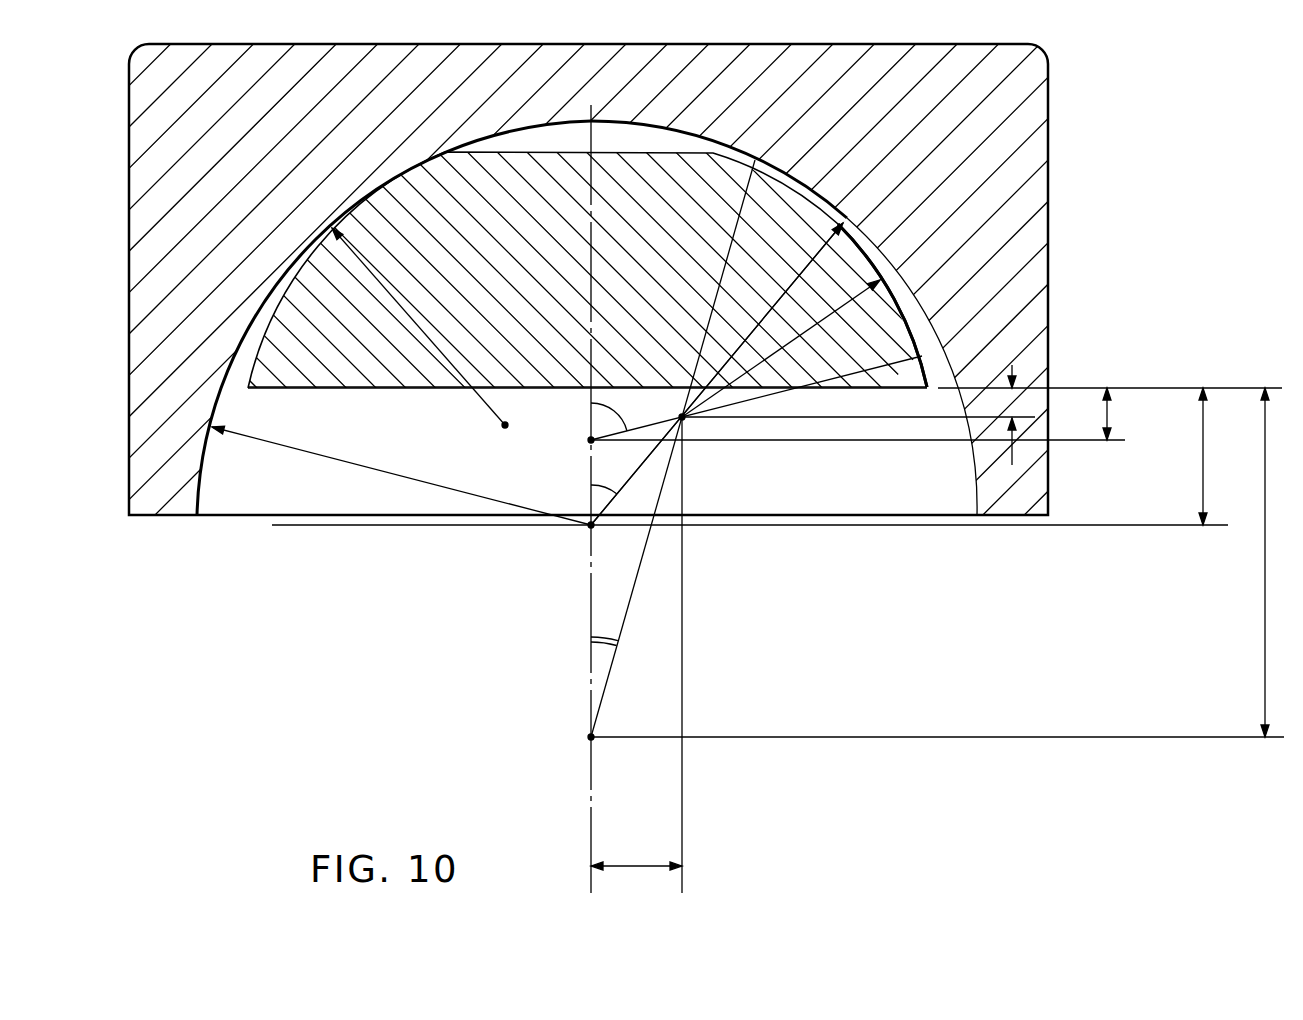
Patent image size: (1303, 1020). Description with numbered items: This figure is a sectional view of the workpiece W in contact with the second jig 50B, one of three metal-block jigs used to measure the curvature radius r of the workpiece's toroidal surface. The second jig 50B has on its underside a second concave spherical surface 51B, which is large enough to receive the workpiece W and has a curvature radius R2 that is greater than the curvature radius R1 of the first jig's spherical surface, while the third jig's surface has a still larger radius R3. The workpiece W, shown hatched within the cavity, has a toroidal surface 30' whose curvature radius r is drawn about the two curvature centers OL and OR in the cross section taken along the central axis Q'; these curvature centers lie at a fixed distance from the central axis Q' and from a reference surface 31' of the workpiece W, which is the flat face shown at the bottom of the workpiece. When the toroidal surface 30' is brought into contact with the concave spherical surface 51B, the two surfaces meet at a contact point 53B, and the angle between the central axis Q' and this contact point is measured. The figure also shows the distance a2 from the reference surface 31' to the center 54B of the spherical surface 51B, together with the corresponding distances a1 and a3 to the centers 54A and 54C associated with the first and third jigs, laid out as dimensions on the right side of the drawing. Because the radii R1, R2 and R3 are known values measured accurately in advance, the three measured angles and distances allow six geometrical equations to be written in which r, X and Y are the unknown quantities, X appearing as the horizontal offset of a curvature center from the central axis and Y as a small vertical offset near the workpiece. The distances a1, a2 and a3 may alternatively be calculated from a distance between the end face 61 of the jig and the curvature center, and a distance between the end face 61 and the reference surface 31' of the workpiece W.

The second jig 50B is at (1023, 110).
The second concave spherical surface 51B is at (922, 316).
The contact point 53B is at (850, 220).
The toroidal surface 30' is at (906, 305).
The reference surface 31' is at (587, 423).
The workpiece W is at (364, 358).
The center of the first spherical surface 54A is at (587, 438).
The center of the second spherical surface 54B is at (588, 527).
The center of the third spherical surface 54C is at (588, 738).
The end face 61 is at (908, 530).
The curvature center OL is at (685, 420).
The curvature center OR is at (508, 428).
The central axis Q' is at (558, 588).
The curvature radius of the first concave spherical surface R1 is at (863, 367).
The curvature radius of the second concave spherical surface R2 is at (778, 268).
The curvature radius of the third concave spherical surface R3 is at (720, 272).
The curvature radius of the toroidal surface r is at (838, 311).
The unknown quantity X is at (636, 853).
The unknown quantity Y is at (1016, 405).
The distance a1 is at (1123, 414).
The distance a2 is at (1220, 456).
The distance a3 is at (1282, 562).